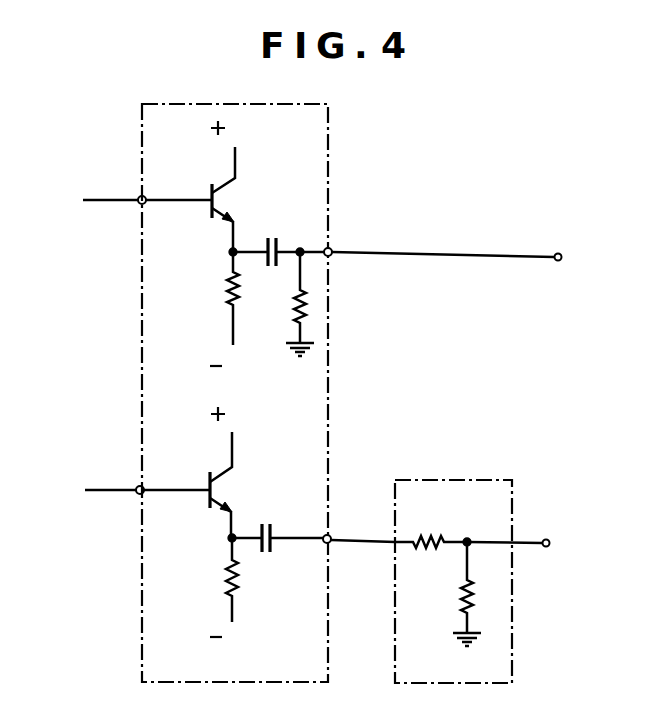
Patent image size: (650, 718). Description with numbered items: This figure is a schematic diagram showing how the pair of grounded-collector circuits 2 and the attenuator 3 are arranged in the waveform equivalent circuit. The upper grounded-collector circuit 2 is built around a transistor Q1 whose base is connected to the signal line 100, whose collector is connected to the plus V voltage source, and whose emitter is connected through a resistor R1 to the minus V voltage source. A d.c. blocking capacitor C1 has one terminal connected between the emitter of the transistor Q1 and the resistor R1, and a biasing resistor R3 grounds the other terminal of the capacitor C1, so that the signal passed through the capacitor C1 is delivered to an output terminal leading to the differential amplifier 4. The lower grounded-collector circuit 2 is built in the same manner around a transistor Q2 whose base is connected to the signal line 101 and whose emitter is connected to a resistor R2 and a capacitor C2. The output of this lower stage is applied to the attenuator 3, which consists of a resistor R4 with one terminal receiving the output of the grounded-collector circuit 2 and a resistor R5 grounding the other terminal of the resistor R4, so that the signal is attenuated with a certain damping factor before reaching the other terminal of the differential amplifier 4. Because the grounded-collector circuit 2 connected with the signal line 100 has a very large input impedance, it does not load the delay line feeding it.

The grounded-collector circuit 2 is at (330, 133).
The attenuator 3 is at (505, 480).
The differential amplifier 4 is at (456, 402).
The signal line 100 is at (98, 199).
The signal line 101 is at (98, 488).
The transistor Q1 is at (232, 205).
The transistor Q2 is at (230, 492).
The d.c. blocking capacitor C1 is at (277, 238).
The capacitor C2 is at (264, 523).
The resistor R1 is at (213, 316).
The resistor R2 is at (209, 594).
The biasing resistor R3 is at (310, 306).
The resistor R4 is at (399, 522).
The resistor R5 is at (448, 592).